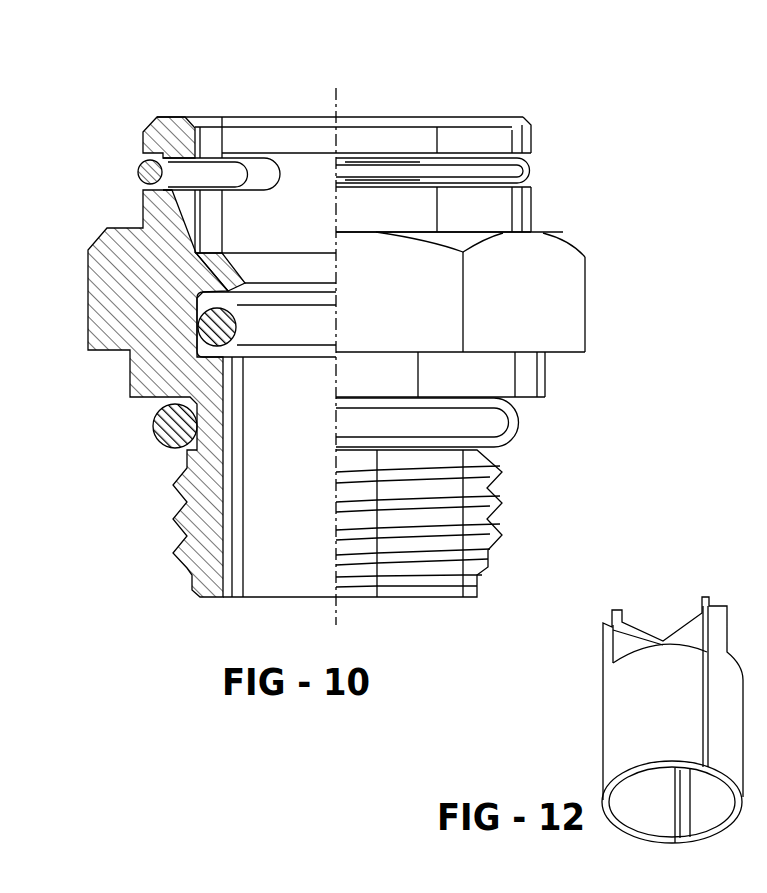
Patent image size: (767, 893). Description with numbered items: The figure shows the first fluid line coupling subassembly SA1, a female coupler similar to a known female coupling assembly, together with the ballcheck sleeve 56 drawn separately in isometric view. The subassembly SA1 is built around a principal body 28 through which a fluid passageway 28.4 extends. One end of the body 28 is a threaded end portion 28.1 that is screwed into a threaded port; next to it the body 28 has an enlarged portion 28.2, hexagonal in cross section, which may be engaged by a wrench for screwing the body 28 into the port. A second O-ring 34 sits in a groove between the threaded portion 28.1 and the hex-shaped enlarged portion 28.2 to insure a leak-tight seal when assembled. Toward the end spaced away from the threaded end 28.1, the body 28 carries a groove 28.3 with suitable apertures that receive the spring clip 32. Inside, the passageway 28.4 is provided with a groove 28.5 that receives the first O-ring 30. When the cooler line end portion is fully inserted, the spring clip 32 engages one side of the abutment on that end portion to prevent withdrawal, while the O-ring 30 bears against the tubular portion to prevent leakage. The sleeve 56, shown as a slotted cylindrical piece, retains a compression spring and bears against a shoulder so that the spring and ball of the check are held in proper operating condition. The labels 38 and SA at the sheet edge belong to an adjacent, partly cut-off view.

In FIG. 10, the principal body 28 is at (133, 380).
In FIG. 10, the threaded end portion 28.1 is at (490, 487).
In FIG. 10, the enlarged portion 28.2 is at (536, 307).
In FIG. 10, the groove 28.3 is at (527, 155).
In FIG. 10, the passageway 28.4 is at (227, 568).
In FIG. 10, the groove 28.5 is at (205, 288).
In FIG. 10, the first O-ring 30 is at (260, 338).
In FIG. 10, the spring clip 32 is at (142, 165).
In FIG. 10, the second O-ring 34 is at (153, 440).
In FIG. 10, the first fluid line coupling subassembly SA1 is at (537, 117).
In FIG. 12, the component (cut off) 38 is at (766, 230).
In FIG. 12, the sub-assembly (cut off) SA is at (756, 487).
In FIG. 12, the ballcheck sleeve 56 is at (672, 716).